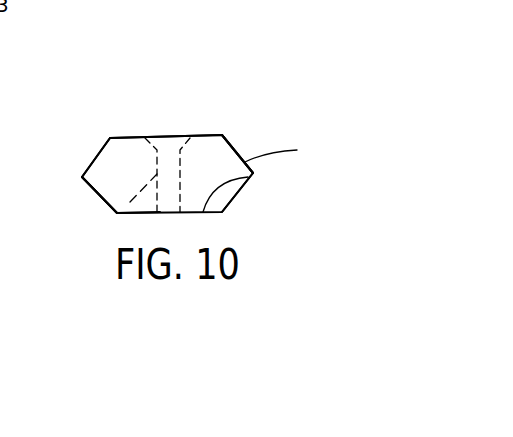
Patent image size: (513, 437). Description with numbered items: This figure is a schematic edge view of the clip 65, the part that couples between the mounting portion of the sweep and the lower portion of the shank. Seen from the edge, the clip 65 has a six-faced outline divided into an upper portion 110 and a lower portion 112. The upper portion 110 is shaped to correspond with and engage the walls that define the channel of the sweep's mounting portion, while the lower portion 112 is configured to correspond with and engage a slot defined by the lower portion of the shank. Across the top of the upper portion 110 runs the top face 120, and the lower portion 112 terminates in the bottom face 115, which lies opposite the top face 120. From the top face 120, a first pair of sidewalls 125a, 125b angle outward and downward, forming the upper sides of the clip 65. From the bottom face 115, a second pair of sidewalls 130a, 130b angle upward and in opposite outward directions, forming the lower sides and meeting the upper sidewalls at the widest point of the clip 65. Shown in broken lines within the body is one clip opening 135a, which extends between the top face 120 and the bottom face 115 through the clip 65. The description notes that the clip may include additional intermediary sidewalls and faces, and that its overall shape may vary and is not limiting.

The clip 65 is at (273, 133).
The upper portion 110 is at (63, 188).
The lower portion 112 is at (63, 190).
The bottom face 115 is at (253, 175).
The top face 120 is at (127, 137).
The first sidewall of first pair of sidewalls 125a is at (98, 153).
The second sidewall of first pair of sidewalls 125b is at (228, 139).
The first sidewall of second pair of sidewalls 130a is at (94, 194).
The second sidewall of second pair of sidewalls 130b is at (237, 193).
The clip opening 135a is at (117, 213).